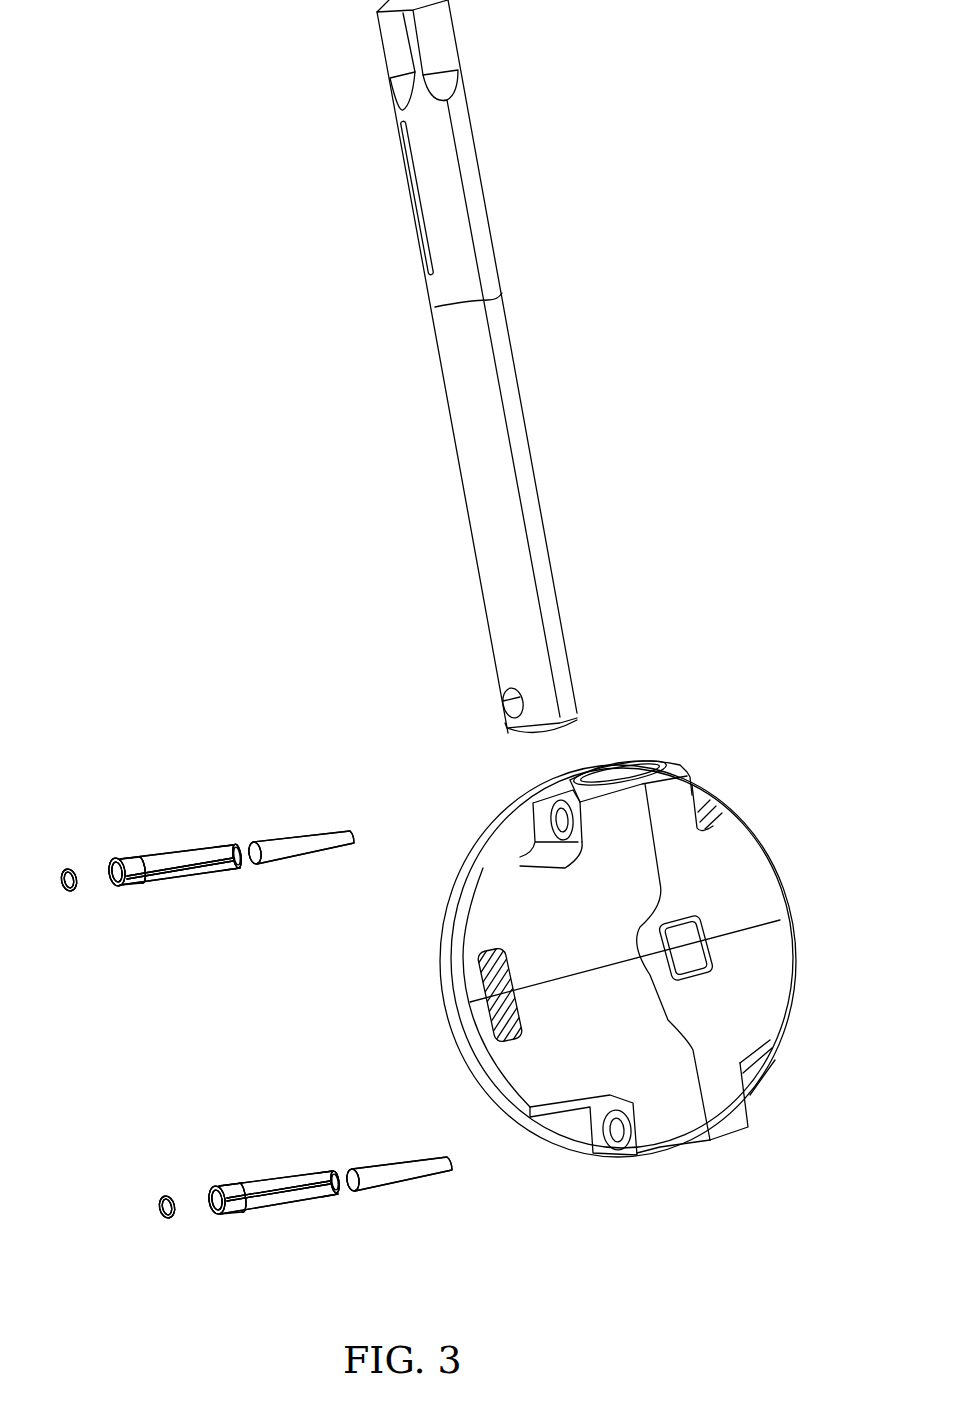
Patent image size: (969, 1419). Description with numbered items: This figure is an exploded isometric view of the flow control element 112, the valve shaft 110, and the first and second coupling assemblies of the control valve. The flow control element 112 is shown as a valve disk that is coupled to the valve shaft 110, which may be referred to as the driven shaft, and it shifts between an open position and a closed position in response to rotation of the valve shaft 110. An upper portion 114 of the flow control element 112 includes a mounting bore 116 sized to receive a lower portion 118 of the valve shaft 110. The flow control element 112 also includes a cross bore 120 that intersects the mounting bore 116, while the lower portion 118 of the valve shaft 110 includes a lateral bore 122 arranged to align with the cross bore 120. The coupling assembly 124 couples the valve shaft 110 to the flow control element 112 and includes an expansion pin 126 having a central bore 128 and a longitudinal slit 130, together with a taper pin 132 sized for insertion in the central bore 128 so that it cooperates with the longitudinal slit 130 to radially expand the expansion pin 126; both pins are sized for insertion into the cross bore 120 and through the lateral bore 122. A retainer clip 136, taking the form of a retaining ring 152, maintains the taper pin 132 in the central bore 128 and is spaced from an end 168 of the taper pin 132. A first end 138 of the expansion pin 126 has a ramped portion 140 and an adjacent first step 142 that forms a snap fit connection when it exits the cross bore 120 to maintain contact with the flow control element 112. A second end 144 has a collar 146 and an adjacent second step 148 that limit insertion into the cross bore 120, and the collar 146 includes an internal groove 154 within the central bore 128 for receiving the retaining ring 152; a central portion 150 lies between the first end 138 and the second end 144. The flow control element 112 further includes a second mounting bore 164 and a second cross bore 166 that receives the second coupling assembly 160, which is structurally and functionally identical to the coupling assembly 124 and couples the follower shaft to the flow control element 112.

The valve shaft 110 is at (447, 337).
The flow control element 112 is at (467, 1010).
The upper portion 114 is at (720, 830).
The mounting bore 116 is at (660, 768).
The lower portion 118 is at (503, 658).
The cross bore 120 is at (557, 817).
The lateral bore 122 is at (512, 717).
The coupling assembly 124 is at (150, 716).
The expansion pin 126 is at (175, 875).
The central bore 128 is at (125, 880).
The longitudinal slit 130 is at (317, 1197).
The taper pin 132 is at (297, 857).
The retainer clip 136 is at (65, 873).
The first end 138 is at (233, 852).
The ramped portion 140 is at (237, 853).
The first step 142 is at (237, 867).
The second end 144 is at (133, 863).
The collar 146 is at (117, 870).
The second step 148 is at (143, 882).
The central portion 150 is at (167, 858).
The retaining ring 152 is at (70, 890).
The internal groove 154 is at (117, 882).
The second coupling assembly 160 is at (105, 1127).
The second mounting bore 164 is at (722, 1142).
The second cross bore 166 is at (620, 1147).
The end 168 is at (263, 860).